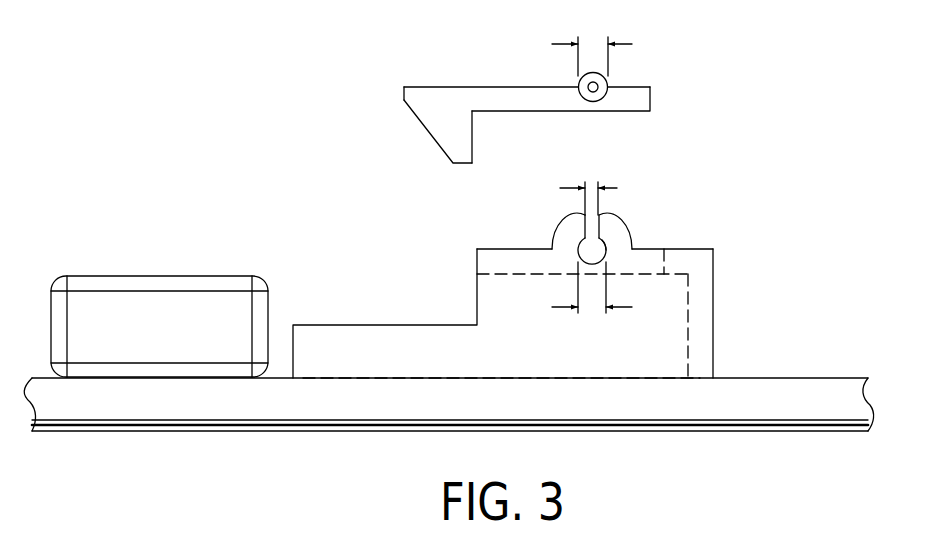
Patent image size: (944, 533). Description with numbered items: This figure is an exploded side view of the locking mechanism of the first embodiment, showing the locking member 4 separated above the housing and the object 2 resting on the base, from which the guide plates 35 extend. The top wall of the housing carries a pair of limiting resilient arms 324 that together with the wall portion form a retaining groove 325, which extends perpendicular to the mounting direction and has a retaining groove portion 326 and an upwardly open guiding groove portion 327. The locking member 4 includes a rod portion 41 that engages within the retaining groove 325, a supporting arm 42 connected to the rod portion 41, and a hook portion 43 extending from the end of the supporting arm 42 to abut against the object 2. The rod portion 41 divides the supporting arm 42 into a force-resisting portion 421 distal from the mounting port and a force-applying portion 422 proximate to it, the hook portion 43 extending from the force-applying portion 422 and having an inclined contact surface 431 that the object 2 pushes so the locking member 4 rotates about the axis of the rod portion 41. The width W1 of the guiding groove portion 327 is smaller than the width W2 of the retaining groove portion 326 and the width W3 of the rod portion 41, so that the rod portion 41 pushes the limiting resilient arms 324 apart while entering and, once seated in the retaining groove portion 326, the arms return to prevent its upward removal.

The object 2 is at (143, 275).
The guide plates 35 is at (343, 353).
The limiting resilient arms 324 is at (565, 237).
The retaining groove 325 is at (607, 250).
The retaining groove portion 326 is at (598, 263).
The guiding groove portion 327 is at (593, 232).
The locking member 4 is at (536, 95).
The rod portion 41 is at (607, 80).
The supporting arm 42 is at (566, 65).
The force-resisting portion 421 is at (633, 100).
The force-applying portion 422 is at (534, 98).
The hook portion 43 is at (412, 135).
The inclined contact surface 431 is at (438, 148).
The width of the guiding groove portion W1 is at (588, 183).
The width of the retaining groove portion W2 is at (592, 304).
The width of the rod portion W3 is at (592, 43).